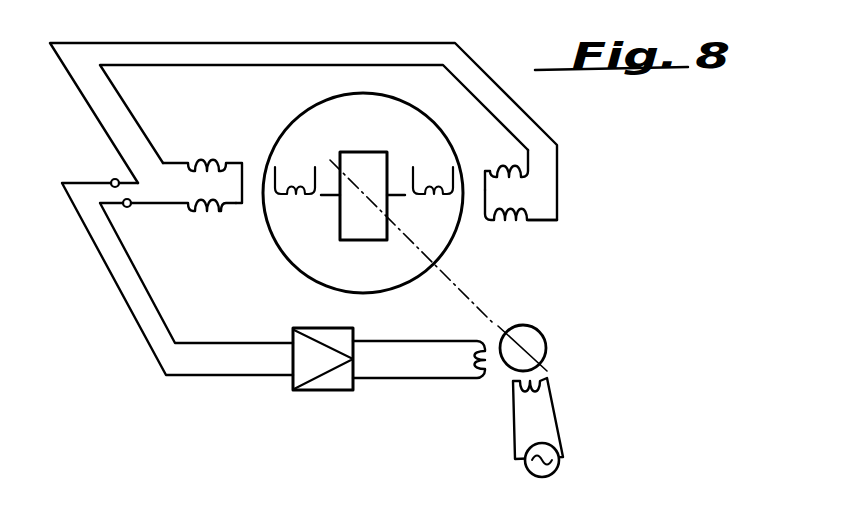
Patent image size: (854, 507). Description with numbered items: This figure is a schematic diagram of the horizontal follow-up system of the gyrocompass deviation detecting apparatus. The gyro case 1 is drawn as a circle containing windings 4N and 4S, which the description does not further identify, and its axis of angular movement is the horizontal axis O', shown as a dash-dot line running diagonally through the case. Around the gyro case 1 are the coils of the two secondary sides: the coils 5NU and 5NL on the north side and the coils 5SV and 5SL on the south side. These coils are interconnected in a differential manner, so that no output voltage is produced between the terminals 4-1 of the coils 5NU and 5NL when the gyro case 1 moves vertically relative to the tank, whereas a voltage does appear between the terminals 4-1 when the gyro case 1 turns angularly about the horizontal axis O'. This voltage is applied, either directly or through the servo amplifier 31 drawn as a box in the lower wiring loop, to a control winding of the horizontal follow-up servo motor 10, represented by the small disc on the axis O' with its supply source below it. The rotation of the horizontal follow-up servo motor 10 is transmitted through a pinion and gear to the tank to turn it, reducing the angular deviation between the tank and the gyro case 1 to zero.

The gyro case 1 is at (309, 108).
The north pole winding 4N is at (296, 201).
The south pole winding 4S is at (427, 167).
The coil 5NU is at (206, 161).
The coil 5NL is at (207, 212).
The coil 5SV is at (509, 163).
The coil 5SL is at (514, 223).
The terminals 4-1 is at (119, 186).
The servo amplifier 31 is at (354, 331).
The horizontal follow-up servo motor 10 is at (548, 340).
The horizontal axis O' is at (436, 242).